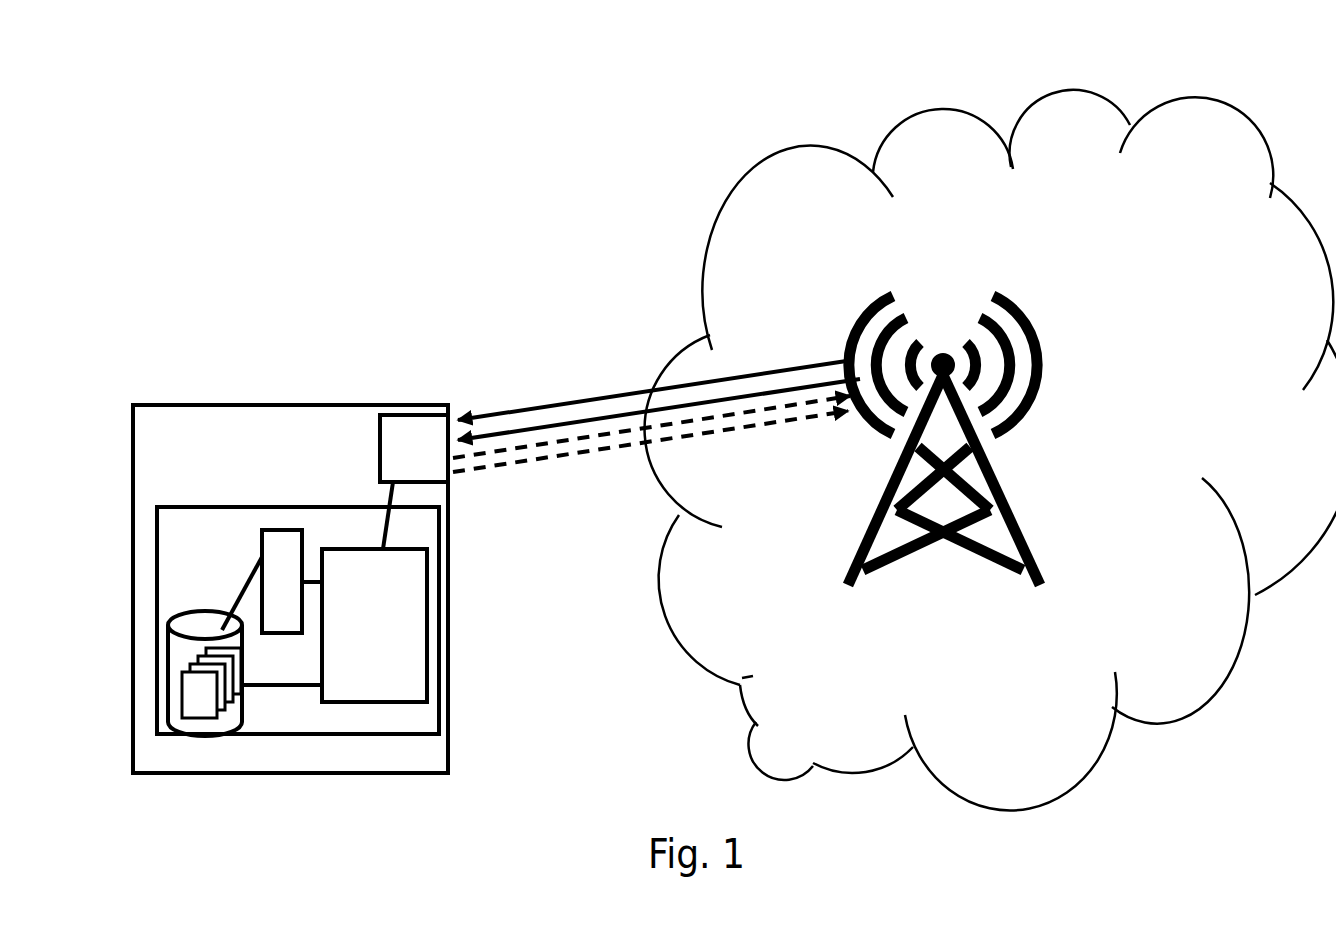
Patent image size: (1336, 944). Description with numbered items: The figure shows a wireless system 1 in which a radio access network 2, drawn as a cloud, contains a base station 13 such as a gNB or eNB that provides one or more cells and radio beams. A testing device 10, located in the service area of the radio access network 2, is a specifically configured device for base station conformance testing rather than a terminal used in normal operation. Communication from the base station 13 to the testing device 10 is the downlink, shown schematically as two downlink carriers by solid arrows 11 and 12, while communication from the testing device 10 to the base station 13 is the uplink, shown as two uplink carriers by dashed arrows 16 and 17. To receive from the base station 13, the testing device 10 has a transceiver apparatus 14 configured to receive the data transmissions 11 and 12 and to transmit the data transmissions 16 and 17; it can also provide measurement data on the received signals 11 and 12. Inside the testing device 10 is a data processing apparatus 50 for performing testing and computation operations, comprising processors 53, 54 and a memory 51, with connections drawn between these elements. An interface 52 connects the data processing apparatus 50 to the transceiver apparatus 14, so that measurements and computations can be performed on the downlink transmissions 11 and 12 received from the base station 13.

The wireless system 1 is at (518, 149).
The radio access network 2 is at (812, 212).
The testing device 10 is at (247, 443).
The downlink carrier 11 is at (587, 402).
The downlink carrier 12 is at (622, 407).
The base station 13 is at (937, 535).
The transceiver apparatus 14 is at (418, 413).
The uplink carrier 16 is at (545, 448).
The uplink carrier 17 is at (603, 452).
The data processing apparatus 50 is at (197, 528).
The memory 51 is at (170, 643).
The interface 52 is at (383, 495).
The processor 53 is at (337, 545).
The processor 54 is at (260, 550).